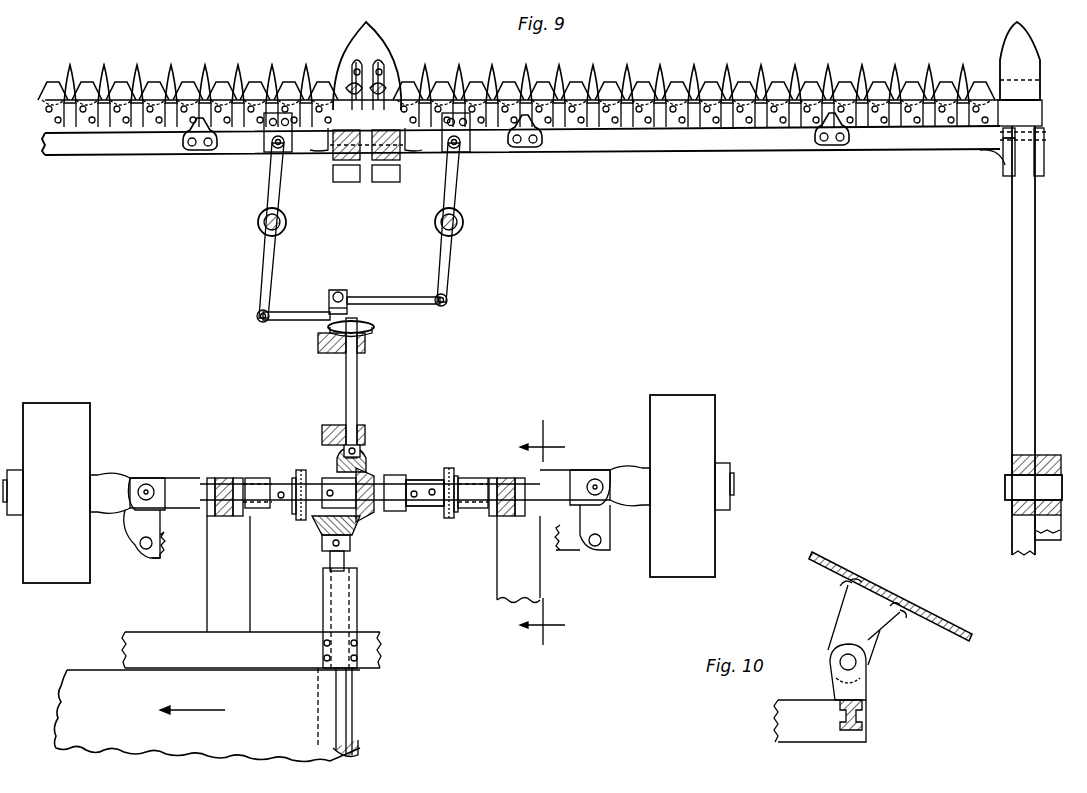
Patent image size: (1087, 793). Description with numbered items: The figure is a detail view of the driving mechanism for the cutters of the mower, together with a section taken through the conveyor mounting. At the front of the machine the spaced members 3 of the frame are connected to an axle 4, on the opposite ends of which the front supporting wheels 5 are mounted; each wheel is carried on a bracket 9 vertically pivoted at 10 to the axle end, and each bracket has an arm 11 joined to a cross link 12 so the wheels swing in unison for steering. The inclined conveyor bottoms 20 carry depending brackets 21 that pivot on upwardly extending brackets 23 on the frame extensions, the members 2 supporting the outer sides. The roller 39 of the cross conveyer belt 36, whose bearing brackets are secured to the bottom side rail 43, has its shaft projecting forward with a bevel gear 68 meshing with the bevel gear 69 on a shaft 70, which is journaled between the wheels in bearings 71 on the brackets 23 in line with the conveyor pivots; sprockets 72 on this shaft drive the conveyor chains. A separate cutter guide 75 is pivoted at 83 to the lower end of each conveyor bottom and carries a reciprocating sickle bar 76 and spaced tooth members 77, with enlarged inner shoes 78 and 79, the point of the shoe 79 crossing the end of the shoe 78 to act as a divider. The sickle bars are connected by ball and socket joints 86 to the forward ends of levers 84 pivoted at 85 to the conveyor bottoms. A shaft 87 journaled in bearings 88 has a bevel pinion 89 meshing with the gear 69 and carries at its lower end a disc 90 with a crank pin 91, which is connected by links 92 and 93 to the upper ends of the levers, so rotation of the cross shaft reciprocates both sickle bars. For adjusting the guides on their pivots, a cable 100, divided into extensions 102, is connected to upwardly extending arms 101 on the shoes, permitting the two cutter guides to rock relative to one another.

In FIG. 9, the forwardly projecting members 2 is at (1047, 532).
In FIG. 9, the spaced members 3 is at (245, 600).
In FIG. 10, the spaced members 3 is at (796, 704).
In FIG. 9, the axle 4 is at (448, 475).
In FIG. 10, the axle 4 is at (864, 712).
In FIG. 9, the front supporting wheels 5 is at (368, 489).
In FIG. 9, the brackets 9 is at (108, 478).
In FIG. 9, the vertical pivots 10 is at (146, 484).
In FIG. 9, the arm 11 is at (130, 540).
In FIG. 9, the cross link 12 is at (162, 558).
In FIG. 9, the conveyor bottoms 20 is at (1012, 407).
In FIG. 10, the conveyor bottoms 20 is at (835, 565).
In FIG. 9, the depending brackets 21 is at (220, 516).
In FIG. 10, the depending brackets 21 is at (880, 637).
In FIG. 9, the upwardly extending brackets 23 is at (214, 478).
In FIG. 10, the upwardly extending brackets 23 is at (865, 672).
In FIG. 9, the conveyer belt 36 is at (207, 716).
In FIG. 9, the roller 39 is at (358, 752).
In FIG. 9, the bottom side rail 43 is at (148, 638).
In FIG. 9, the bevel gear 68 is at (312, 530).
In FIG. 9, the bevel gear 69 is at (375, 512).
In FIG. 9, the shaft 70 is at (402, 478).
In FIG. 9, the bearing 71 is at (250, 478).
In FIG. 9, the sprockets 72 is at (295, 520).
In FIG. 9, the cutter guide 75 is at (120, 148).
In FIG. 9, the sickle bar 76 is at (645, 108).
In FIG. 9, the tooth members 77 is at (722, 72).
In FIG. 9, the shoe 78 is at (352, 75).
In FIG. 9, the shoe 79 is at (388, 62).
In FIG. 9, the pivots 83 is at (408, 152).
In FIG. 9, the levers 84 is at (262, 263).
In FIG. 9, the pivot 85 is at (259, 216).
In FIG. 9, the ball and socket joints 86 is at (262, 150).
In FIG. 9, the shaft 87 is at (358, 378).
In FIG. 9, the bearings 88 is at (327, 363).
In FIG. 9, the bevel pinion 89 is at (334, 462).
In FIG. 9, the disc 90 is at (370, 330).
In FIG. 9, the crank pin 91 is at (337, 290).
In FIG. 9, the link 92 is at (282, 322).
In FIG. 9, the link 93 is at (396, 297).
In FIG. 9, the cable 100 is at (348, 95).
In FIG. 9, the arms 101 is at (358, 62).
In FIG. 9, the cable extensions 102 is at (392, 88).